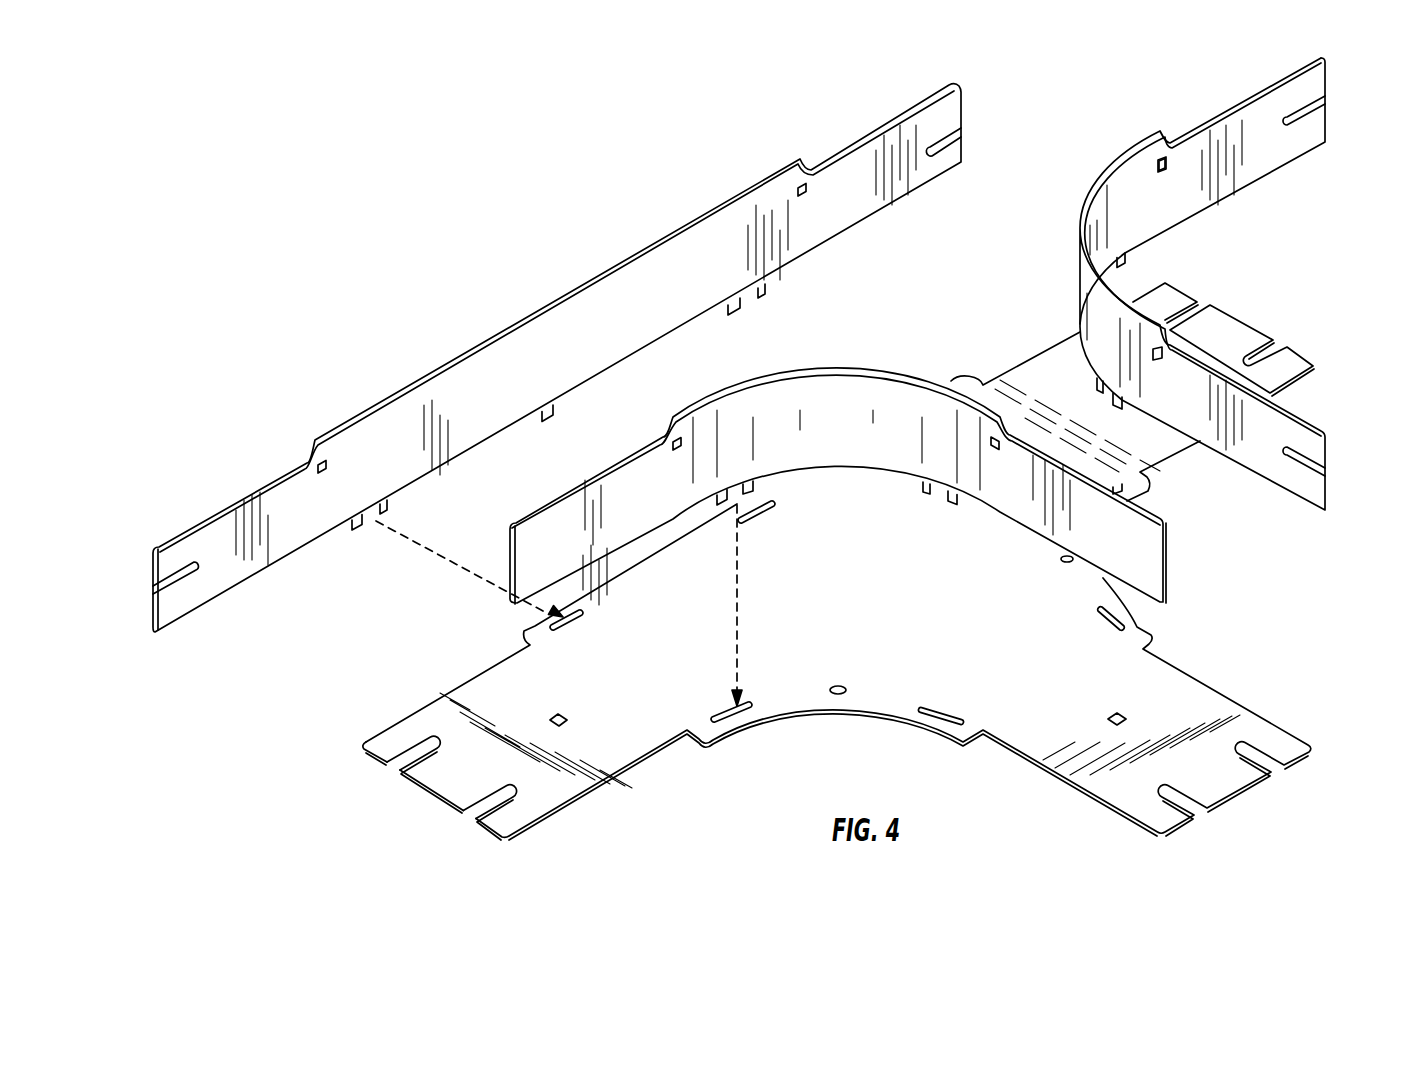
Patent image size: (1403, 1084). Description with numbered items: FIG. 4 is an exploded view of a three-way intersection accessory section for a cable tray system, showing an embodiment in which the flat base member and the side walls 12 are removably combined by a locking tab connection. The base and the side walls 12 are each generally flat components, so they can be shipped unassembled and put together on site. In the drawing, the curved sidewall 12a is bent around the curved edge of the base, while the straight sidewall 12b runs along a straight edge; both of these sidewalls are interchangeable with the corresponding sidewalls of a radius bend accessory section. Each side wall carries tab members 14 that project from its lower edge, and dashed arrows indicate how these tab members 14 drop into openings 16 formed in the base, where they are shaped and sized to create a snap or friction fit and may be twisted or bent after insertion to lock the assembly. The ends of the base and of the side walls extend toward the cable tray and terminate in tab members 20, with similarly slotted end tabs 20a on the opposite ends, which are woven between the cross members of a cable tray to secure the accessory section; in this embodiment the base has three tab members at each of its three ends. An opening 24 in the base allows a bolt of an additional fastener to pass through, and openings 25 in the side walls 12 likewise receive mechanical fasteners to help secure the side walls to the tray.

The sidewall 12 is at (1237, 153).
The sidewall 12a is at (846, 414).
The sidewall 12b is at (651, 296).
The tab member 14 is at (752, 312).
The opening 16 is at (724, 707).
The tab member 20 is at (960, 95).
The connector end 20a is at (177, 604).
The opening 24 is at (1127, 717).
The opening 25 is at (1160, 158).